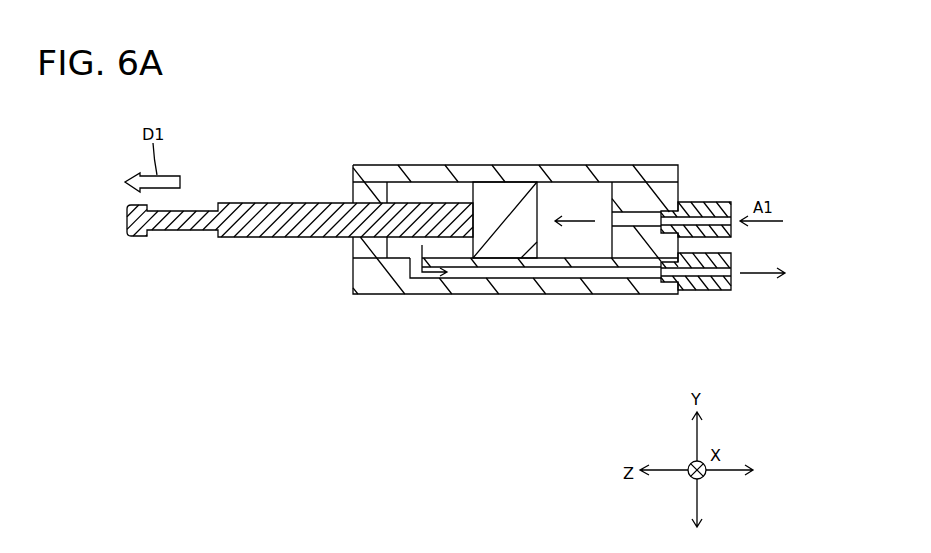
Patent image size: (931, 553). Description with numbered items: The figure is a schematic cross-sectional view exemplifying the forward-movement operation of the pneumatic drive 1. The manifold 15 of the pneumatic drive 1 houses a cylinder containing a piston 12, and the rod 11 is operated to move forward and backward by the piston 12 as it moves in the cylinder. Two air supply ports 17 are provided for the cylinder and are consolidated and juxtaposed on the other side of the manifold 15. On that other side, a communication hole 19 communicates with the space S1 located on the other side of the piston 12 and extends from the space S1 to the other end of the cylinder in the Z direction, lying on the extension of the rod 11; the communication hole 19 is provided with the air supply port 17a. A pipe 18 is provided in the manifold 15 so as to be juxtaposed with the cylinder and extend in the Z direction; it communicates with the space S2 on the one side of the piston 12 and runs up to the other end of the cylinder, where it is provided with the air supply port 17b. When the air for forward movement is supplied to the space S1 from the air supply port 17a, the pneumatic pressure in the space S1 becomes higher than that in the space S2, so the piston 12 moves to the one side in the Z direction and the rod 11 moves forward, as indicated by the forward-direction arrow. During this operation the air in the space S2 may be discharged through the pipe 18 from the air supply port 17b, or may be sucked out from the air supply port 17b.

The pneumatic drive 1 is at (692, 87).
The rod 11 is at (278, 205).
The piston 12 is at (508, 185).
The manifold 15 is at (558, 181).
The air supply port 17 is at (714, 246).
The air supply port 17a is at (705, 202).
The air supply port 17b is at (705, 290).
The pipe 18 is at (544, 280).
The communication hole 19 is at (638, 211).
The space S1 is at (602, 192).
The space S2 is at (418, 182).